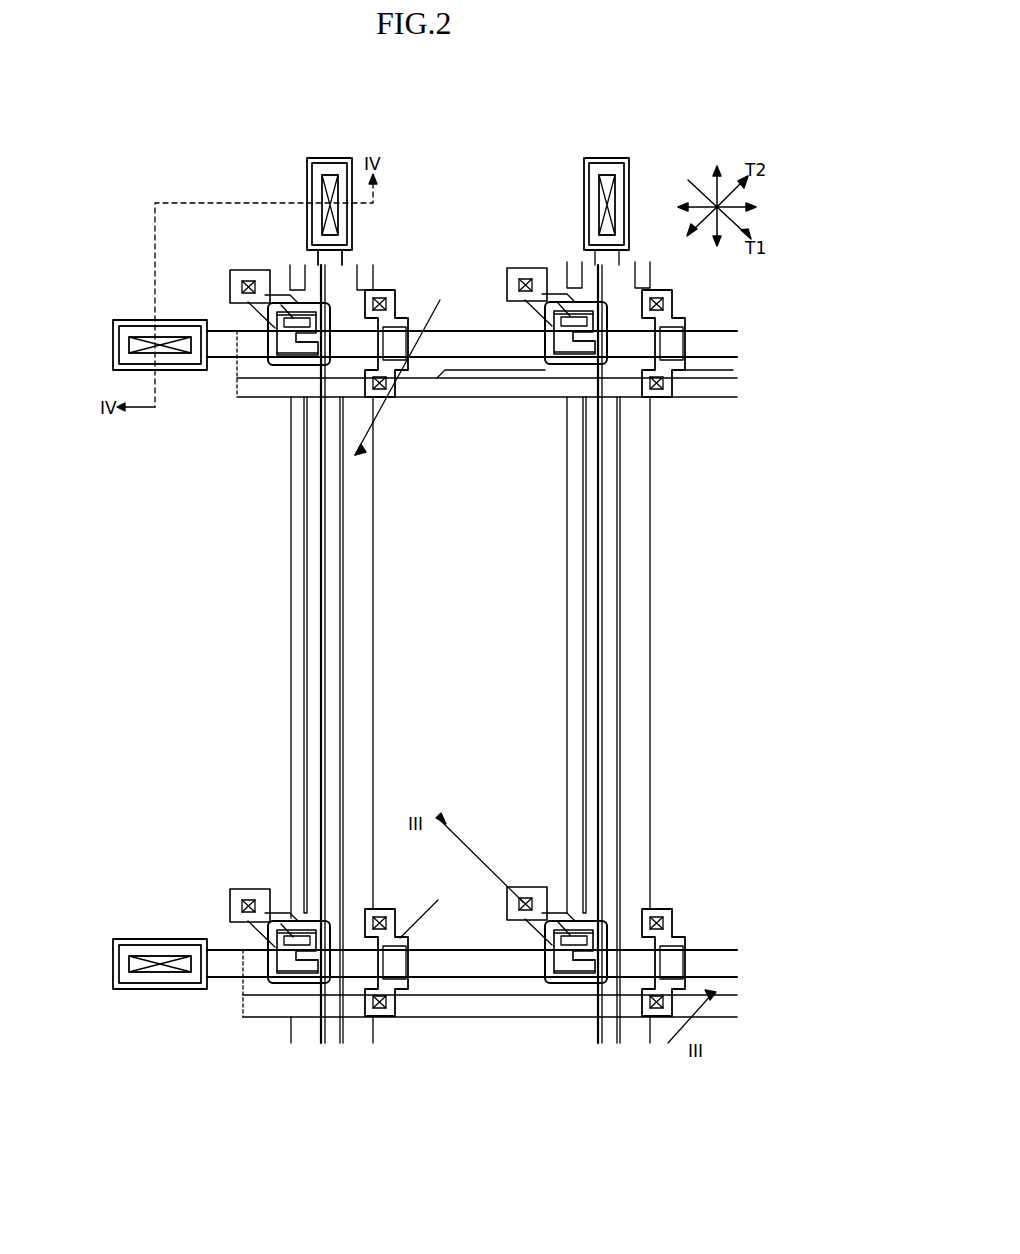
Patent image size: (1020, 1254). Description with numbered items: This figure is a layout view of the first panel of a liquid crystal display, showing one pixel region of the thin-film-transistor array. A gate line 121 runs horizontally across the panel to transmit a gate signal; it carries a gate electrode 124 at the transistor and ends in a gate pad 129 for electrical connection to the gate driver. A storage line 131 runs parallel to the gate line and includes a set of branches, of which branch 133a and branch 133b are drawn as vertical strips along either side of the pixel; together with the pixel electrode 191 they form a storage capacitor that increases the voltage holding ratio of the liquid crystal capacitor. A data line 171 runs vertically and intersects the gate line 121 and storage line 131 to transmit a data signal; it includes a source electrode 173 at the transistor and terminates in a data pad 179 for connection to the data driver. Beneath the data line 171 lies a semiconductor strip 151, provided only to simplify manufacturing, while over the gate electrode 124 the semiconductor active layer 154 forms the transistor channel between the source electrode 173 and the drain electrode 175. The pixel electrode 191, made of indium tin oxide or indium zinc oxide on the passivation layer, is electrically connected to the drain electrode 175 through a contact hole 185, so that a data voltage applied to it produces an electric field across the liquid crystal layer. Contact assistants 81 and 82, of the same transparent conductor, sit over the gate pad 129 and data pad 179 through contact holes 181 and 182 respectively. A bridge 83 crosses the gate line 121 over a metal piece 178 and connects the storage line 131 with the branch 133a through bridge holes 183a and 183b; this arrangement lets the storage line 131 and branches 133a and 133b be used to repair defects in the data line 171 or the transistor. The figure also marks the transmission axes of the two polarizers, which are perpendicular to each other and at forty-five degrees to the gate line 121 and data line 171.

The contact assistant 81 is at (113, 332).
The contact assistant 82 is at (307, 236).
The bridge 83 is at (440, 300).
The gate line 121 is at (514, 357).
The gate electrode 124 is at (540, 983).
The gate pad 129 is at (113, 356).
The storage line 131 is at (425, 397).
The branch 133a is at (371, 472).
The branch 133b is at (567, 622).
The semiconductor strip 151 is at (343, 600).
The semiconductor active layer 154 is at (512, 983).
The data line 171 is at (343, 720).
The source electrode 173 is at (590, 983).
The drain electrode 175 is at (497, 983).
The metal piece 178 is at (345, 1043).
The data pad 179 is at (328, 160).
The contact hole 181 is at (145, 338).
The contact hole 182 is at (340, 226).
The bridge hole 183a is at (380, 1016).
The bridge hole 183b is at (383, 912).
The contact hole 185 is at (510, 905).
The pixel electrode 191 is at (443, 1017).